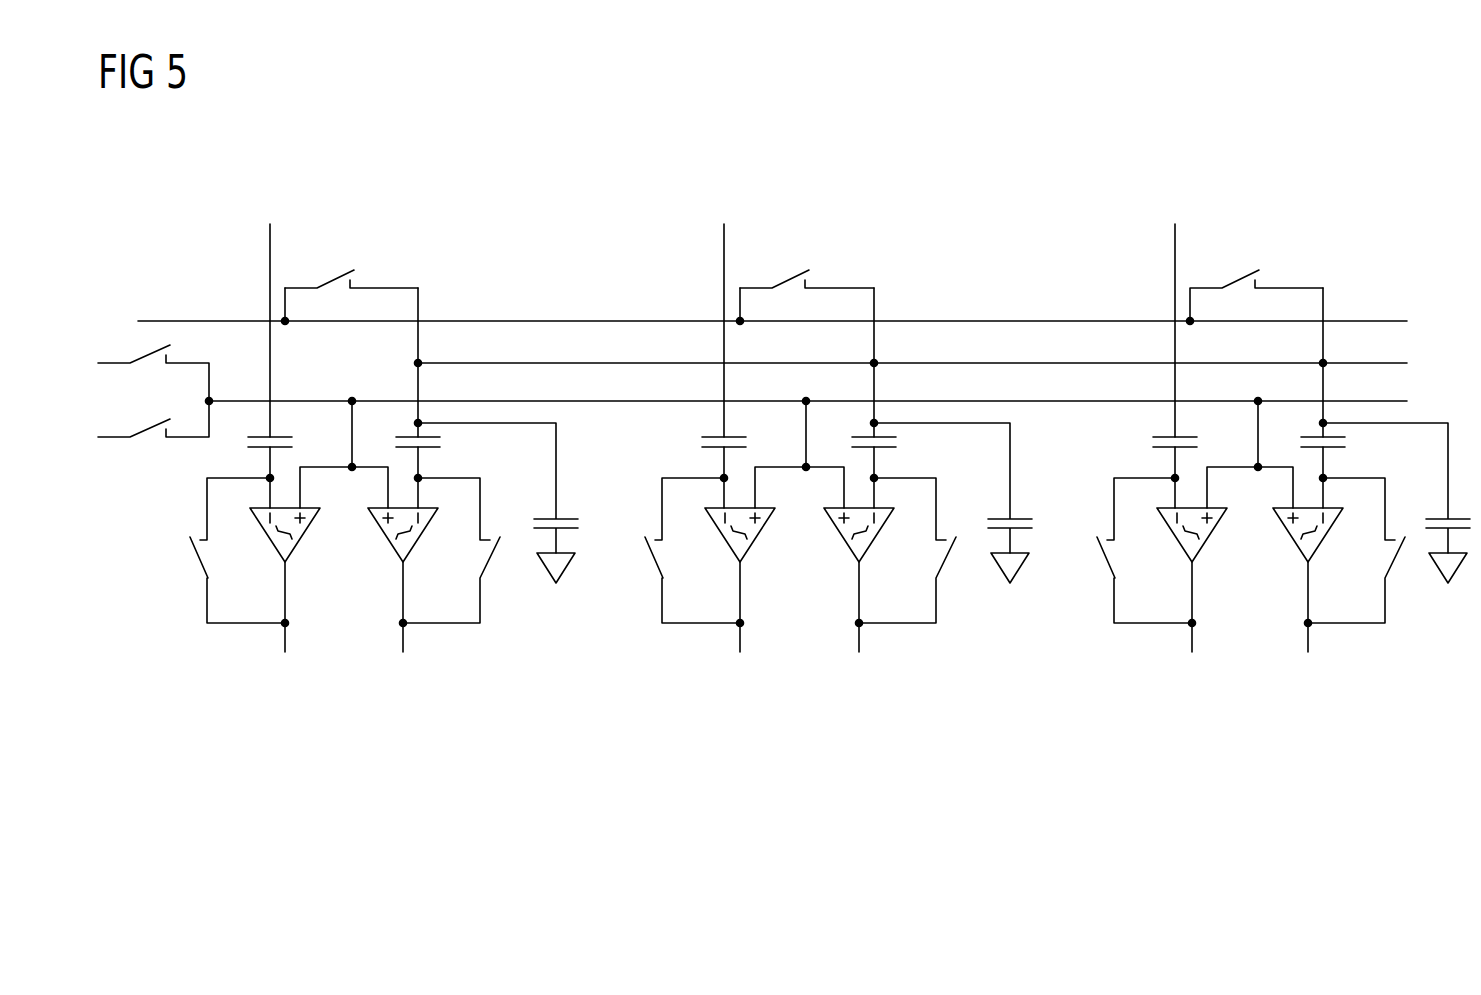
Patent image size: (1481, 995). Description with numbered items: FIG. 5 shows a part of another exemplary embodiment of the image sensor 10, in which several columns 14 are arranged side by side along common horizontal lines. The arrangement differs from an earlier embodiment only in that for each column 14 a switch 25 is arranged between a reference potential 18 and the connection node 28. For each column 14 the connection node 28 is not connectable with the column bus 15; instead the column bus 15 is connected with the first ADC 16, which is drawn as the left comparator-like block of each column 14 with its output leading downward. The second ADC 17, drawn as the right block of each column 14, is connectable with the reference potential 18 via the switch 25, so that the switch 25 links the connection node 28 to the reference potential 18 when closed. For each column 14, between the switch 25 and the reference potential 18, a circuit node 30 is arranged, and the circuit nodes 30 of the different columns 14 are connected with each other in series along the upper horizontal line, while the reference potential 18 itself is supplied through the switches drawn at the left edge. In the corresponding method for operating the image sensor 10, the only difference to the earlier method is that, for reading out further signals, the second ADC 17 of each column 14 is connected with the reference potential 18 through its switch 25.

The image sensor 10 is at (1362, 161).
The column 14 is at (340, 170).
The column bus 15 is at (270, 232).
The first ADC 16 is at (286, 684).
The second ADC 17 is at (403, 684).
The reference potential 18 is at (167, 320).
The switch 25 is at (335, 282).
The connection node 28 is at (418, 363).
The circuit node 30 is at (285, 321).